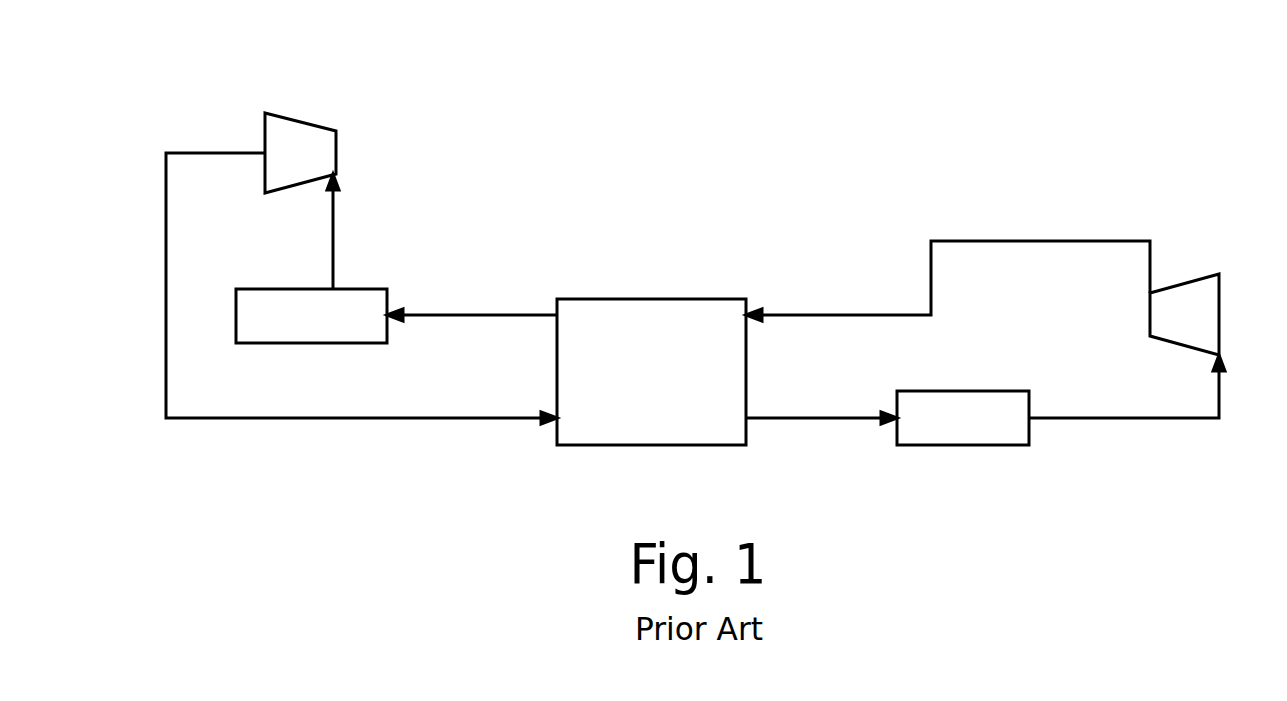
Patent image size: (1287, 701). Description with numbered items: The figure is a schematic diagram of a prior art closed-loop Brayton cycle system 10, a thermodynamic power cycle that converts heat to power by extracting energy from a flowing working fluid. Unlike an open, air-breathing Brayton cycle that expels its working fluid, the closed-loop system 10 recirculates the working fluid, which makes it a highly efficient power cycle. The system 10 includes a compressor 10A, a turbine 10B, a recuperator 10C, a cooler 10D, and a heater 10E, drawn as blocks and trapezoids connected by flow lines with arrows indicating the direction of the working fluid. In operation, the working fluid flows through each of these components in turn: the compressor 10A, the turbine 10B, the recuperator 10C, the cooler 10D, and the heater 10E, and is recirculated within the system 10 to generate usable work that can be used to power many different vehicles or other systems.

The closed-loop Brayton cycle system 10 is at (695, 237).
The compressor 10A is at (1193, 297).
The turbine 10B is at (299, 133).
The recuperator 10C is at (638, 308).
The cooler 10D is at (967, 433).
The heater 10E is at (365, 298).